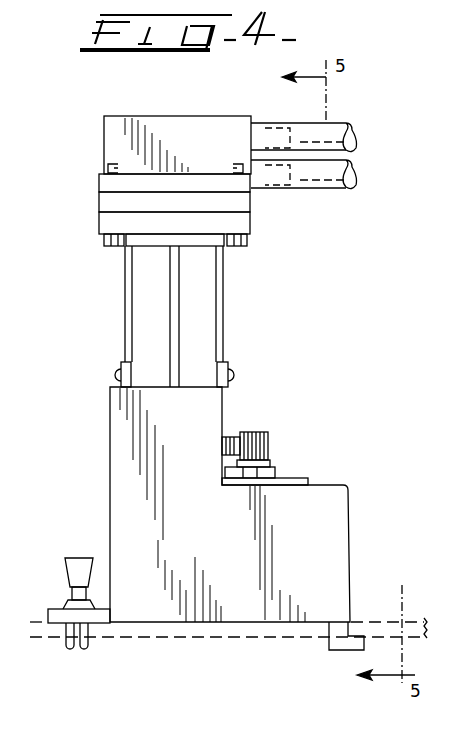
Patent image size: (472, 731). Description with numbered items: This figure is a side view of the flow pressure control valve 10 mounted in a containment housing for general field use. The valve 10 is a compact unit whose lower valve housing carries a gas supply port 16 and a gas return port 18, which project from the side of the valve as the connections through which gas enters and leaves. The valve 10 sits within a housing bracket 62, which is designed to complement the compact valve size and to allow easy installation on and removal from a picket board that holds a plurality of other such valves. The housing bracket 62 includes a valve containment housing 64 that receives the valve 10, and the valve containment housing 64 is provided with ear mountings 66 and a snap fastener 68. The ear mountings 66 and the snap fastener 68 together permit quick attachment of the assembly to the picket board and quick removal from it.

The flow pressure control valve 10 is at (253, 310).
The gas supply port 16 is at (343, 126).
The gas return port 18 is at (336, 188).
The housing bracket 62 is at (100, 420).
The valve containment housing 64 is at (243, 553).
The ear mountings 66 is at (335, 645).
The snap fastener 68 is at (76, 546).